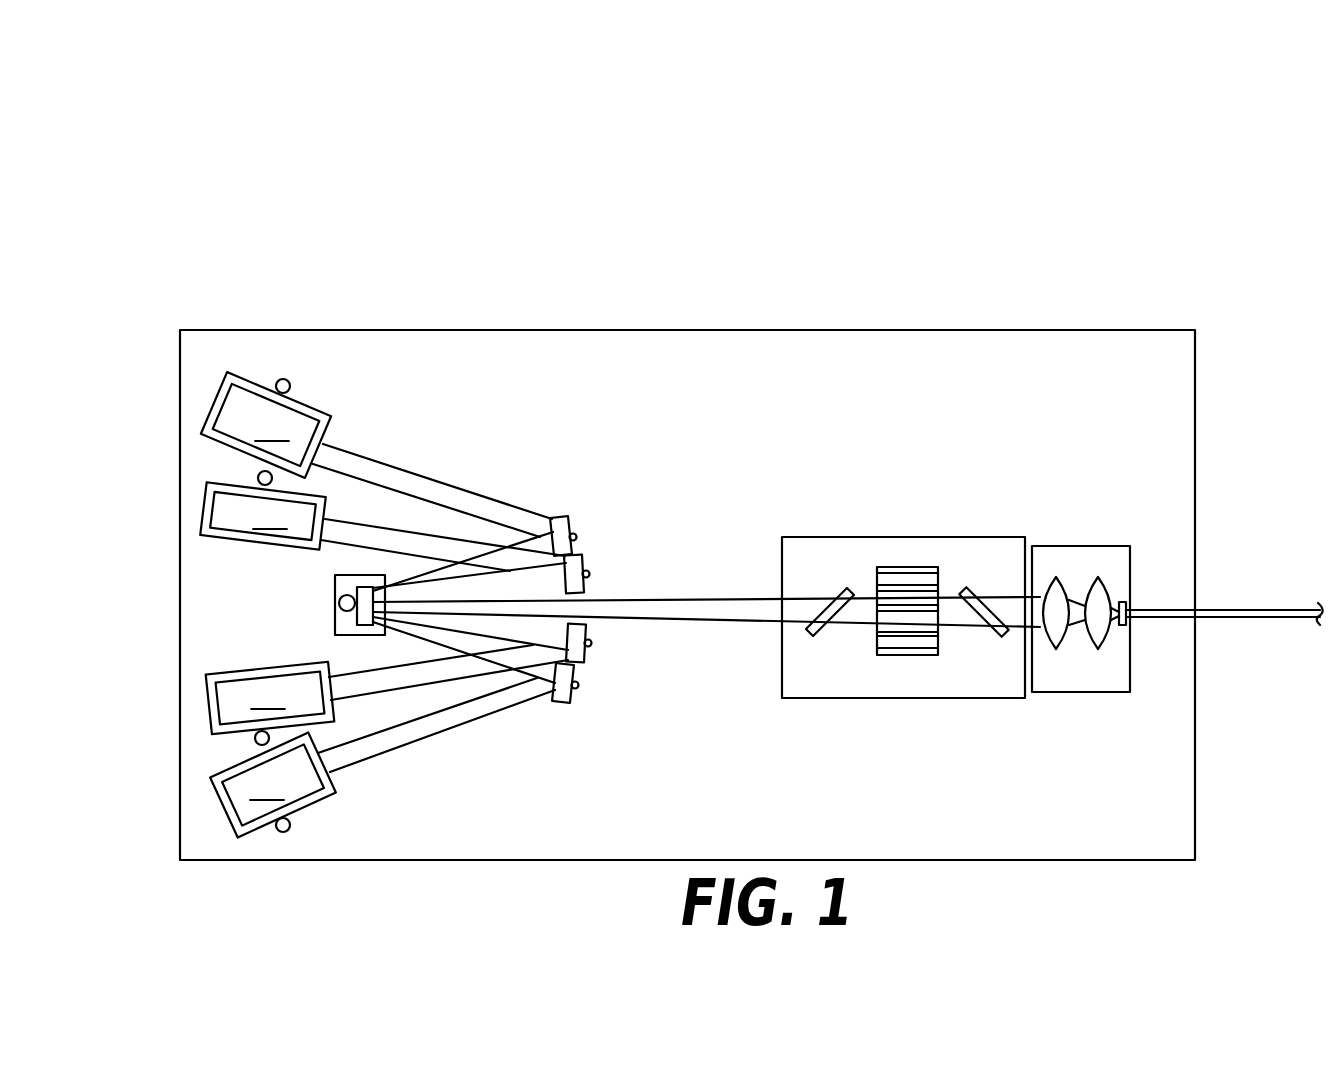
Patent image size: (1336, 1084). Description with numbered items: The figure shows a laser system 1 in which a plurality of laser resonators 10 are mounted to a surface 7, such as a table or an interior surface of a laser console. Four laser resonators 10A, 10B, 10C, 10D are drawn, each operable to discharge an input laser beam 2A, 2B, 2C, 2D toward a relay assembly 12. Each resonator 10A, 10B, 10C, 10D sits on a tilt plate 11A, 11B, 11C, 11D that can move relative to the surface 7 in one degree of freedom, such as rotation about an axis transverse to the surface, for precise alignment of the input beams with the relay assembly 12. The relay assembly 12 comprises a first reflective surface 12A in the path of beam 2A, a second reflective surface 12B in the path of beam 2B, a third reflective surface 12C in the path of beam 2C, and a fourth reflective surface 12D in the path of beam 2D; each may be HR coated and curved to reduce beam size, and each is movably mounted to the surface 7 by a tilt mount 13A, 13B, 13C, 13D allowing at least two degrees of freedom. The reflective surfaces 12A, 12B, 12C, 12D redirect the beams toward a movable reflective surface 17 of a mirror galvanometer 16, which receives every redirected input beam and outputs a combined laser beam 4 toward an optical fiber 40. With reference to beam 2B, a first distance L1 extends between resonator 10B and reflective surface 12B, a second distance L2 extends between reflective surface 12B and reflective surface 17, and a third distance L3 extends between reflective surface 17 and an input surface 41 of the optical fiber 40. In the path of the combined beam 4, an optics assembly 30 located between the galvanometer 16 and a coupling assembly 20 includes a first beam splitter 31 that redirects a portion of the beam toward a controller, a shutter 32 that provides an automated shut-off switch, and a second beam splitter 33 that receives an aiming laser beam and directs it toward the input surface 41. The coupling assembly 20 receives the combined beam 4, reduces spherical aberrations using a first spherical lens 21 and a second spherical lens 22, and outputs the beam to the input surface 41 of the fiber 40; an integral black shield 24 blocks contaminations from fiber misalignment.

The laser system 1 is at (667, 495).
The surface 7 is at (687, 542).
The plurality of laser resonators 10 is at (173, 586).
The laser resonator 10A is at (266, 425).
The laser resonator 10B is at (263, 515).
The laser resonator 10C is at (270, 698).
The laser resonator 10D is at (273, 784).
The tilt plate 11A is at (252, 332).
The tilt plate 11B is at (175, 500).
The tilt plate 11C is at (198, 736).
The tilt plate 11D is at (238, 869).
The input laser beam 2A is at (432, 451).
The input laser beam 2B is at (418, 553).
The input laser beam 2C is at (431, 661).
The input laser beam 2D is at (436, 745).
The relay assembly 12 is at (655, 522).
The first reflective surface 12A is at (583, 491).
The second reflective surface 12B is at (618, 551).
The third reflective surface 12C is at (621, 658).
The fourth reflective surface 12D is at (584, 724).
The tilt mount 13A is at (624, 502).
The tilt mount 13B is at (641, 568).
The tilt mount 13C is at (636, 639).
The tilt mount 13D is at (625, 706).
The mirror galvanometer 16 is at (297, 621).
The movable reflective surface 17 is at (302, 605).
The first distance L1 is at (469, 540).
The second distance L2 is at (461, 616).
The third distance L3 is at (706, 567).
The combined laser beam 4 is at (753, 677).
The optics assembly 30 is at (911, 588).
The first beam splitter 31 is at (847, 671).
The shutter 32 is at (934, 659).
The second beam splitter 33 is at (1000, 680).
The coupling assembly 20 is at (1100, 611).
The first spherical lens 21 is at (1070, 665).
The second spherical lens 22 is at (1118, 675).
The black shield 24 is at (1145, 659).
The input surface 41 is at (1143, 579).
The optical fiber 40 is at (1224, 579).